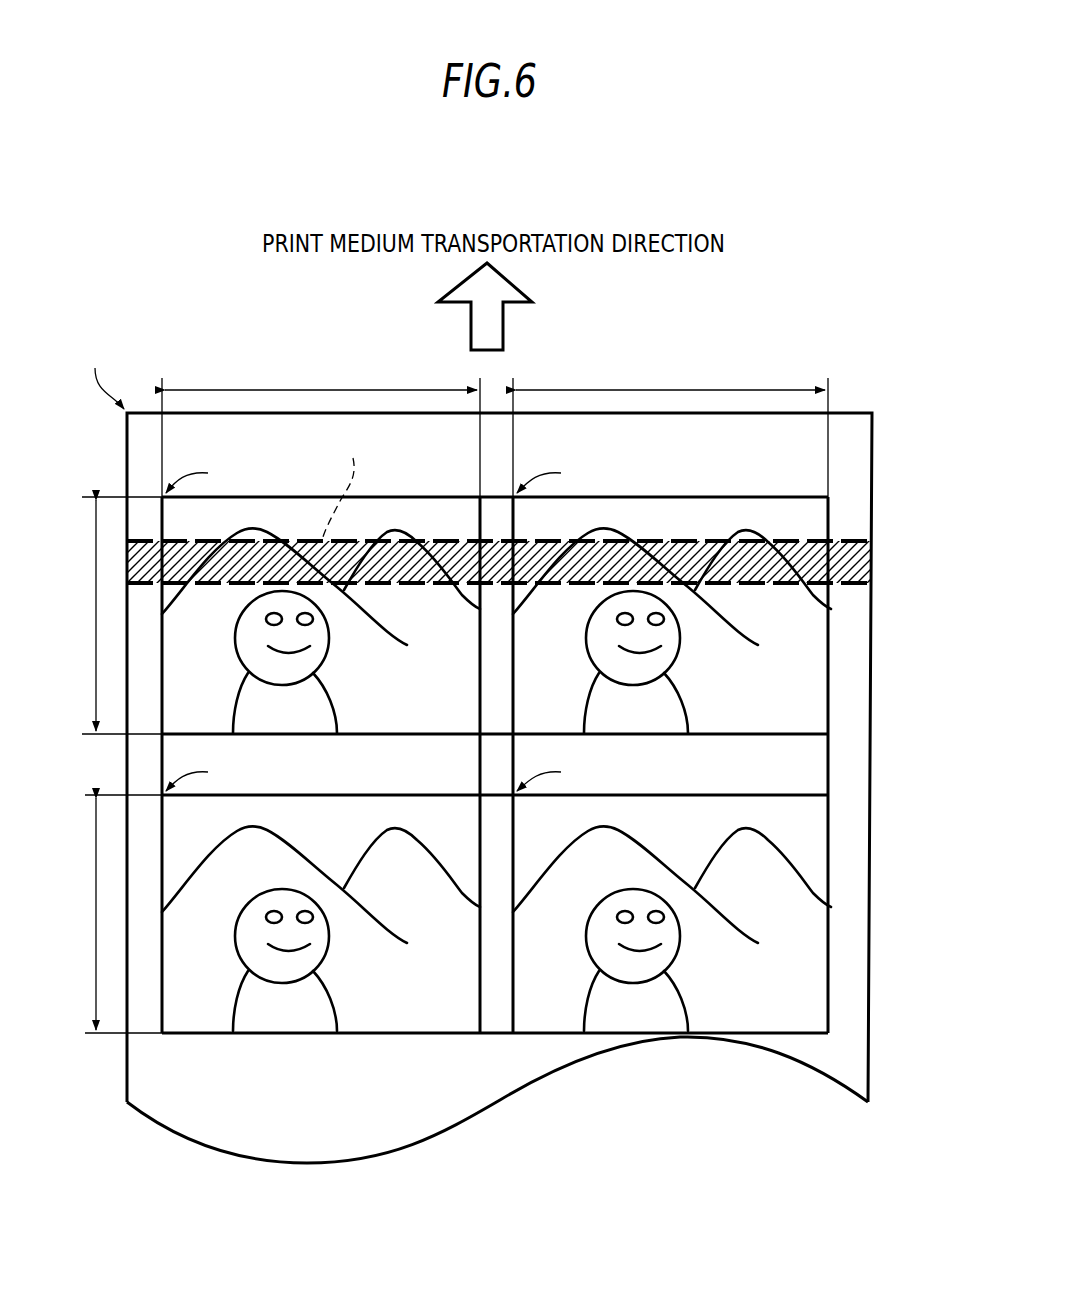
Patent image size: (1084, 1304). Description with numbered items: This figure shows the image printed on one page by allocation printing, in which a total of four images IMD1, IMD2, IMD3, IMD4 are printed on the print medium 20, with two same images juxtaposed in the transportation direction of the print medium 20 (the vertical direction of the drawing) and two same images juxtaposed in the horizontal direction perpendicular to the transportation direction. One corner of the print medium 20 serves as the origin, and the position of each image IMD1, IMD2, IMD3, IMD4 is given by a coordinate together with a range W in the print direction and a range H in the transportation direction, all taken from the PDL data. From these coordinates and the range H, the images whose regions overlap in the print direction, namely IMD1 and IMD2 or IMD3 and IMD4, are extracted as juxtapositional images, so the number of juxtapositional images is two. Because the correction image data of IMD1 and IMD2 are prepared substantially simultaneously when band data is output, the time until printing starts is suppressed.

The print medium 20 is at (848, 411).
The image IMD1 is at (380, 505).
The image IMD2 is at (712, 505).
The image IMD3 is at (380, 802).
The image IMD4 is at (705, 805).